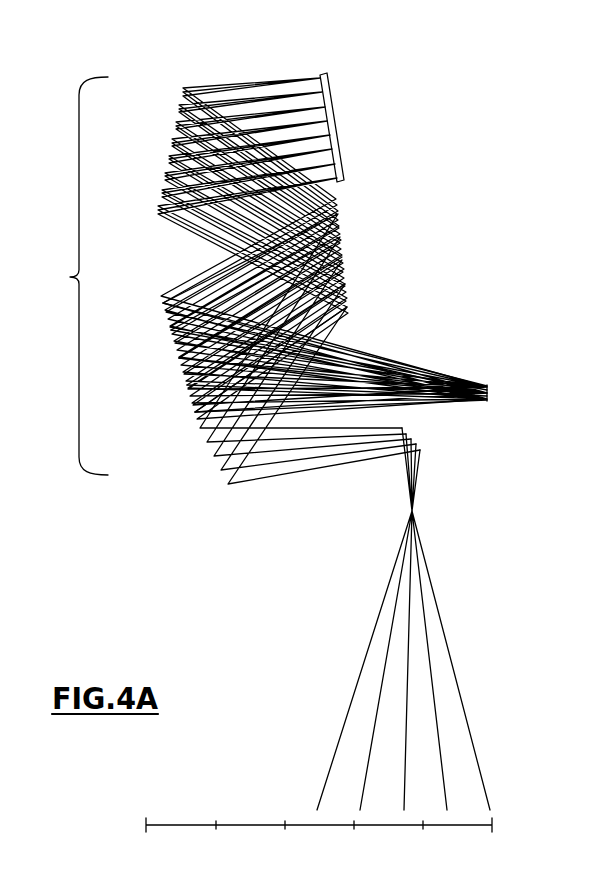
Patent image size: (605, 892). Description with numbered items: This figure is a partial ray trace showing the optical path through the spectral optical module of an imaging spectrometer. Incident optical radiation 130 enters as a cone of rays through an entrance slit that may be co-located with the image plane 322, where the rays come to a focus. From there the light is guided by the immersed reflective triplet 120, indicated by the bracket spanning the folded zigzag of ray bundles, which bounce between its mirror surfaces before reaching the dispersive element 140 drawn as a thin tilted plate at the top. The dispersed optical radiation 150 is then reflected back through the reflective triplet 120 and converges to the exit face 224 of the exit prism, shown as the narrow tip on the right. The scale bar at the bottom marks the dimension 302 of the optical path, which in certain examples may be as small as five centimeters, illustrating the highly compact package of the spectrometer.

The immersed reflective triplet 120 is at (67, 276).
The incident optical radiation 130 is at (336, 693).
The dispersive element 140 is at (356, 108).
The dispersed optical radiation 150 is at (406, 345).
The exit face 224 is at (500, 393).
The dimension 302 is at (319, 846).
The image plane 322 is at (392, 516).